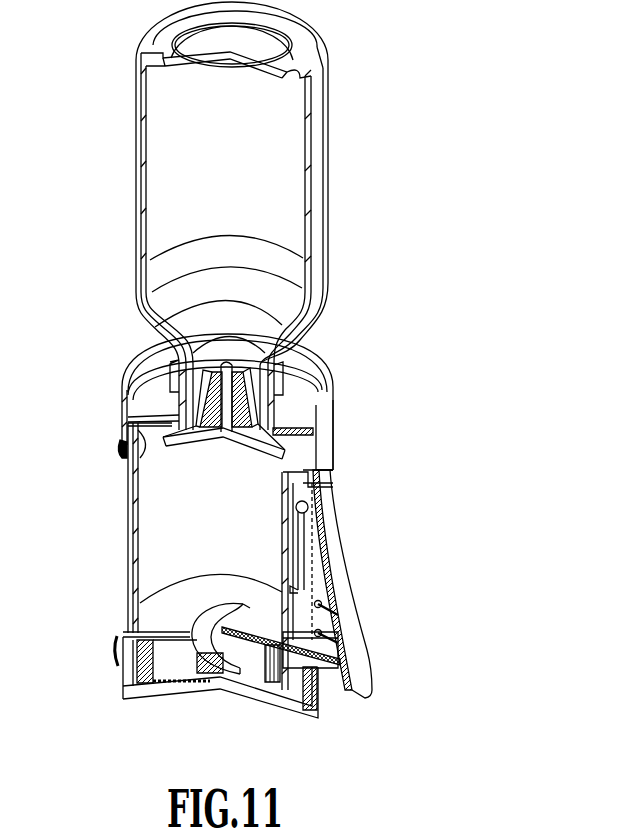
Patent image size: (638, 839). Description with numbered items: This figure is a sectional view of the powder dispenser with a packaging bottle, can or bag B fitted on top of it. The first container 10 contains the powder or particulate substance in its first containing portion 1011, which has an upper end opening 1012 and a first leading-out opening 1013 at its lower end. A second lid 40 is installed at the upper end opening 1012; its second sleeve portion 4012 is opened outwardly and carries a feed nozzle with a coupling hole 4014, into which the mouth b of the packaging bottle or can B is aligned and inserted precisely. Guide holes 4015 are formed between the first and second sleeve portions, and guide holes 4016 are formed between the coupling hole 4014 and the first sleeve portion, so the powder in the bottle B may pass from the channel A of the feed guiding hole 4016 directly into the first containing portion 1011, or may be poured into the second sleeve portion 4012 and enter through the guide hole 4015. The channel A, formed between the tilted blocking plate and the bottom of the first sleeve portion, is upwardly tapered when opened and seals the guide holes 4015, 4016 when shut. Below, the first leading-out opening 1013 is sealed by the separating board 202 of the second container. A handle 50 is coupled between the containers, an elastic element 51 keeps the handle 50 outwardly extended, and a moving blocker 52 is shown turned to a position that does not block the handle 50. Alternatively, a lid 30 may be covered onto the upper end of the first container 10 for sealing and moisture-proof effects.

The packaging bottle, can or bag B is at (142, 148).
The mouth b is at (180, 345).
The moving channel A is at (190, 430).
The coupling hole 4014 is at (175, 357).
The second lid 40 is at (122, 387).
The second sleeve portion 4012 is at (303, 397).
The guide holes 4016 is at (262, 412).
The guide holes 4015 is at (273, 431).
The first container 10 is at (137, 553).
The first containing portion 1011 is at (195, 507).
The opening 1012 is at (132, 460).
The first leading-out opening 1013 is at (195, 585).
The elastic element 51 is at (298, 544).
The handle 50 is at (340, 567).
The moving blocker 52 is at (340, 606).
The separating board 202 is at (313, 648).
The lid 30 is at (122, 670).